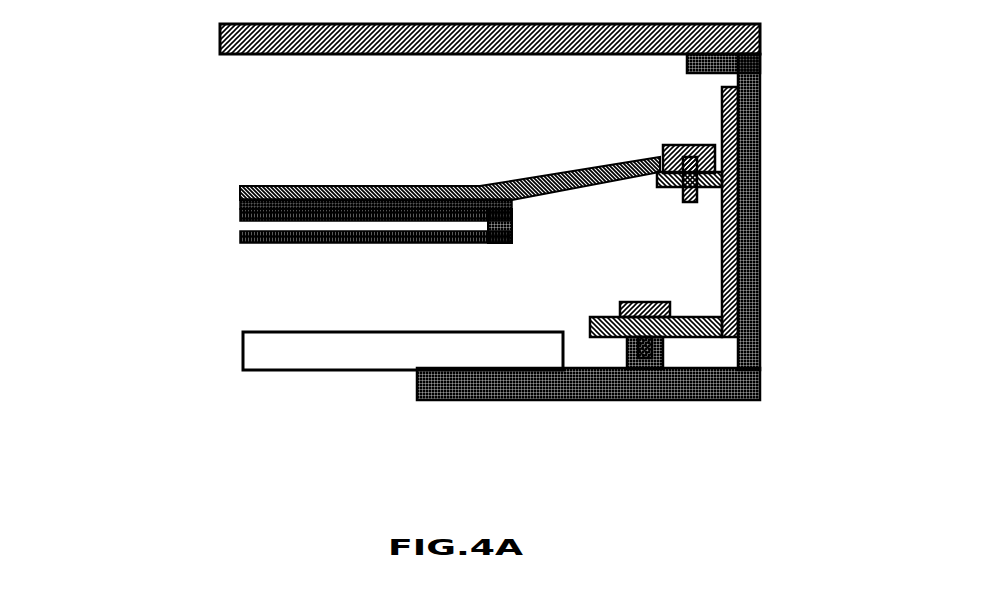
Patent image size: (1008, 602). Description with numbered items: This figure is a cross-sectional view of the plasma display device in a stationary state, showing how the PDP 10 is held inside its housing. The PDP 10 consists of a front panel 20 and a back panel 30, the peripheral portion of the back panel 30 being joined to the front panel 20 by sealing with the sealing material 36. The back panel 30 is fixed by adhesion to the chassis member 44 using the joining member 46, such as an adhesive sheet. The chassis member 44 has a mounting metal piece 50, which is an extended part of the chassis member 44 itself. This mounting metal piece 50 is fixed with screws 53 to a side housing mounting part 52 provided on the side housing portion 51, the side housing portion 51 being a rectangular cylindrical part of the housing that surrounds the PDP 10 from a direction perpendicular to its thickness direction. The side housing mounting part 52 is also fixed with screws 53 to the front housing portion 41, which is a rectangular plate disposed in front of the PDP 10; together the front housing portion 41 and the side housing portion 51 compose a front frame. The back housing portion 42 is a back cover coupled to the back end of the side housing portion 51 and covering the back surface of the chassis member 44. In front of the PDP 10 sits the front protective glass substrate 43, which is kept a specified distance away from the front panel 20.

The PDP 10 is at (268, 246).
The front panel 20 is at (260, 244).
The back panel 30 is at (240, 216).
The sealing material 36 is at (512, 237).
The front housing portion 41 is at (760, 373).
The back housing portion 42 is at (760, 35).
The front protective glass substrate 43 is at (327, 350).
The chassis member 44 is at (337, 192).
The joining member 46 is at (240, 203).
The mounting metal piece 50 is at (566, 218).
The side housing portion 51 is at (760, 117).
The side housing mounting part 52 is at (760, 148).
The screws 53 is at (760, 185).